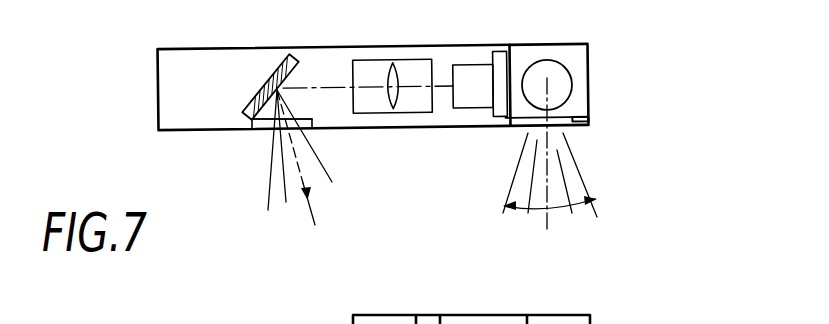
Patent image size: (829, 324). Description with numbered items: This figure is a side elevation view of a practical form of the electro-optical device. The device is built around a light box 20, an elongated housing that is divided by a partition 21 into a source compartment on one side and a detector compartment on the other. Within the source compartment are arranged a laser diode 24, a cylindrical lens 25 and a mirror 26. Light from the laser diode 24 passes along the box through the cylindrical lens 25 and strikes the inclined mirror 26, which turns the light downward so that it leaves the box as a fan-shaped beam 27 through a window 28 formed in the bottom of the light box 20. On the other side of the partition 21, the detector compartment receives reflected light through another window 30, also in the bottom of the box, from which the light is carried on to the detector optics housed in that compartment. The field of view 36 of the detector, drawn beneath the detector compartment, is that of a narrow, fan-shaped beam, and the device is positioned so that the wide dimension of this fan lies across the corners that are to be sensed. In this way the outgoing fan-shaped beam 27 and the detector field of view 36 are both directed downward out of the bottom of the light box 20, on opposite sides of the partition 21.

The light box 20 is at (455, 48).
The partition 21 is at (510, 68).
The laser diode 24 is at (470, 97).
The cylindrical lens 25 is at (400, 64).
The mirror 26 is at (264, 88).
The fan-shaped beam 27 is at (294, 207).
The window 28 is at (262, 125).
The window 30 is at (590, 120).
The field of view 36 is at (535, 208).